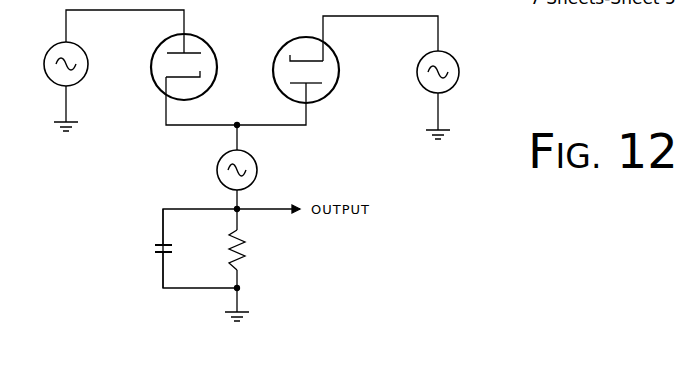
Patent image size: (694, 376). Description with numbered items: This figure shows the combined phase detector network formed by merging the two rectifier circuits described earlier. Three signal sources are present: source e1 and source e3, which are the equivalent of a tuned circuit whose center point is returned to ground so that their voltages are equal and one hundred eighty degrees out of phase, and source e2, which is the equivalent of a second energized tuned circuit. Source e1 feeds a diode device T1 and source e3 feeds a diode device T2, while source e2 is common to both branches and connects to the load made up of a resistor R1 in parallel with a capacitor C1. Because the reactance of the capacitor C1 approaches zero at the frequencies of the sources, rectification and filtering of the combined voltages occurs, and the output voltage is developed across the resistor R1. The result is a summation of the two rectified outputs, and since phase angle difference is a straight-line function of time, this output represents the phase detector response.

The signal source e1 is at (55, 62).
The diode device T1 is at (186, 61).
The diode device T2 is at (311, 66).
The signal source e2 is at (248, 168).
The signal source e3 is at (447, 70).
The capacitor C1 is at (149, 248).
The resistor R1 is at (250, 250).